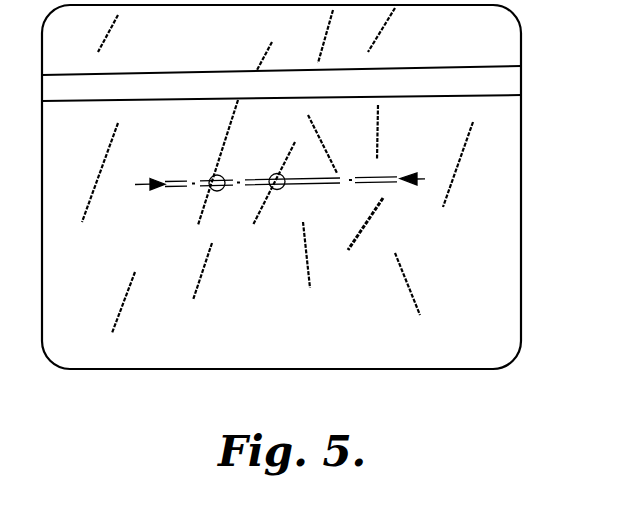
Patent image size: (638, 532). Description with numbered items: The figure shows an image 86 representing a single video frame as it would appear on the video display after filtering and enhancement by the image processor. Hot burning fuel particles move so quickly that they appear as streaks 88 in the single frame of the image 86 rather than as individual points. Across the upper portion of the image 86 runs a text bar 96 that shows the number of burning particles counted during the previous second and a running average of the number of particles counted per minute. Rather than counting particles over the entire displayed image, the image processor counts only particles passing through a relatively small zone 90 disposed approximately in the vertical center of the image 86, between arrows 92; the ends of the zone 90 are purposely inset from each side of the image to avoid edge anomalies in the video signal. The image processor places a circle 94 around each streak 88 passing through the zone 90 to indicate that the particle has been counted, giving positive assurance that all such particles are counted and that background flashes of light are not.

The image 86 is at (522, 208).
The streaks 88 is at (325, 38).
The zone 90 is at (370, 182).
The arrows 92 is at (137, 183).
The circle 94 is at (212, 178).
The text bar 96 is at (423, 66).